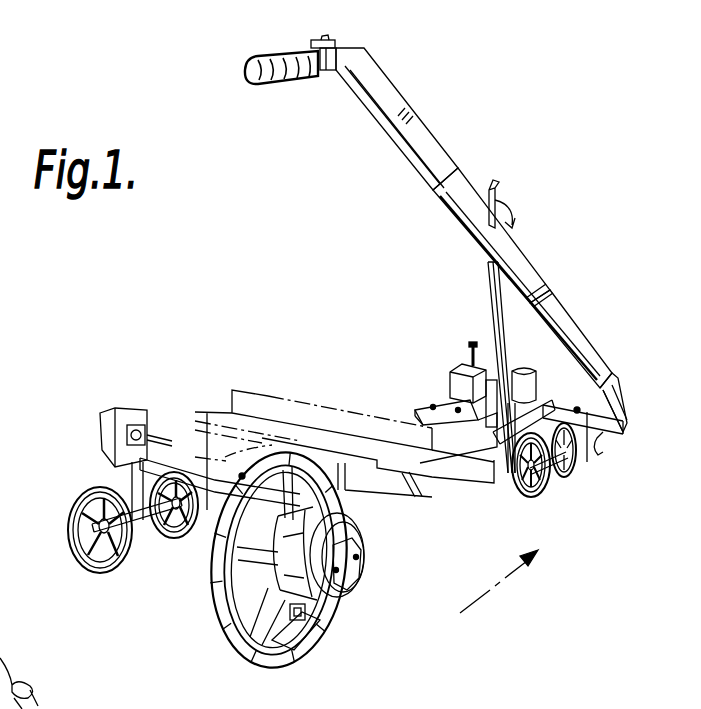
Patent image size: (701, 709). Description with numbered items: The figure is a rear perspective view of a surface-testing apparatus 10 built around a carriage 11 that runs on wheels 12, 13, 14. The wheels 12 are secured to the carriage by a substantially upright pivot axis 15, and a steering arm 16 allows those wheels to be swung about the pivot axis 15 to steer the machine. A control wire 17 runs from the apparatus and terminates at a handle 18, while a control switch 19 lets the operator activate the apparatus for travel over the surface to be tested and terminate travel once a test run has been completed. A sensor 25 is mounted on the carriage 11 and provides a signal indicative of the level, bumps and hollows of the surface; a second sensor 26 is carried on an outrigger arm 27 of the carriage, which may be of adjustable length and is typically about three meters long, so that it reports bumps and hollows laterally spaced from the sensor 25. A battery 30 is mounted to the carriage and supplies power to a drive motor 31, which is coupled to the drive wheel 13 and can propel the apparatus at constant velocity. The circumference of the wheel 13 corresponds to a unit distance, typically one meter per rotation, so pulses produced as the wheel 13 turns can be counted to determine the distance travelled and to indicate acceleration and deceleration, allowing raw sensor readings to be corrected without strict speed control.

The apparatus 10 is at (490, 119).
The carriage 11 is at (457, 495).
The wheels 12 is at (572, 462).
The drive wheel 13 is at (310, 640).
The wheels 14 is at (153, 550).
The pivot axis 15 is at (545, 387).
The steering arm 16 is at (571, 325).
The control wire 17 is at (378, 124).
The handle 18 is at (280, 85).
The control switch 19 is at (331, 41).
The sensor 25 is at (455, 383).
The second sensor 26 is at (110, 412).
The outrigger arm 27 is at (208, 500).
The battery 30 is at (427, 406).
The drive motor 31 is at (335, 590).